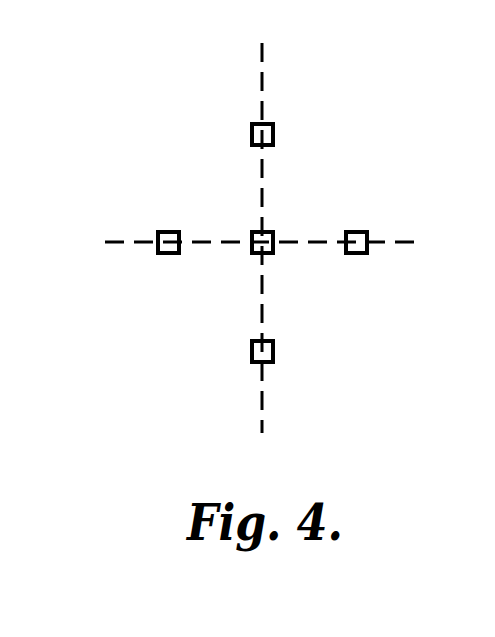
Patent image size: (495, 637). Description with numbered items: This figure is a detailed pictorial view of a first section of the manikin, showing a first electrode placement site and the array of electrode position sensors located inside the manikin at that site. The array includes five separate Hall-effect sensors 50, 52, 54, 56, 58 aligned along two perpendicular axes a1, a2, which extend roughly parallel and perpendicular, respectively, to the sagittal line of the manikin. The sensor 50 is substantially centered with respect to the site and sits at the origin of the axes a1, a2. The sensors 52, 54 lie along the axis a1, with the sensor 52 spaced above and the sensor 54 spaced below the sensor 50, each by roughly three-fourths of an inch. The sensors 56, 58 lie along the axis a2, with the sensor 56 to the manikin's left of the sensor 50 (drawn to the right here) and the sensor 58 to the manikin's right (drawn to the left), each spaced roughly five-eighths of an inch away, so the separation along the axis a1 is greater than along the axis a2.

The axis a1 is at (263, 87).
The axis a2 is at (404, 242).
The Hall-effect sensor 50 is at (273, 246).
The Hall-effect sensor 52 is at (274, 134).
The Hall-effect sensor 54 is at (274, 352).
The Hall-effect sensor 56 is at (357, 254).
The Hall-effect sensor 58 is at (170, 254).